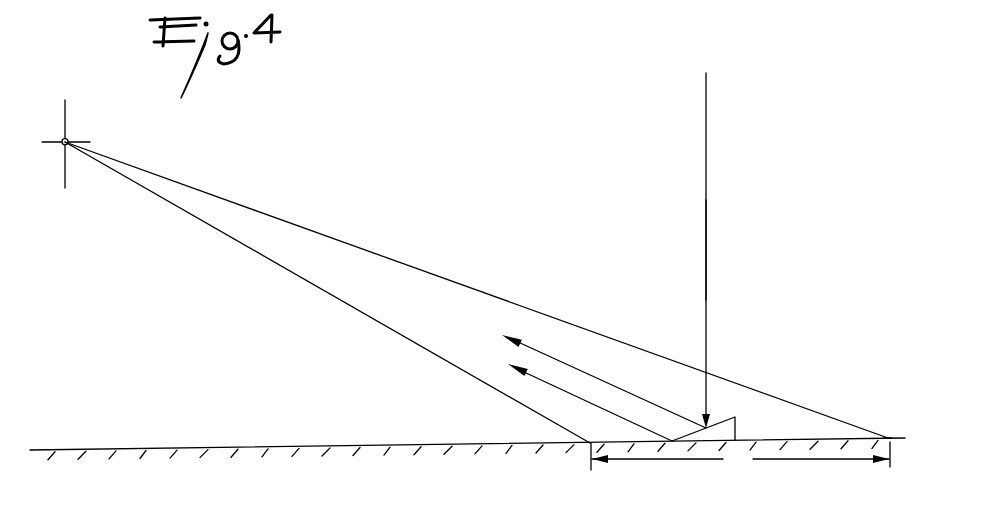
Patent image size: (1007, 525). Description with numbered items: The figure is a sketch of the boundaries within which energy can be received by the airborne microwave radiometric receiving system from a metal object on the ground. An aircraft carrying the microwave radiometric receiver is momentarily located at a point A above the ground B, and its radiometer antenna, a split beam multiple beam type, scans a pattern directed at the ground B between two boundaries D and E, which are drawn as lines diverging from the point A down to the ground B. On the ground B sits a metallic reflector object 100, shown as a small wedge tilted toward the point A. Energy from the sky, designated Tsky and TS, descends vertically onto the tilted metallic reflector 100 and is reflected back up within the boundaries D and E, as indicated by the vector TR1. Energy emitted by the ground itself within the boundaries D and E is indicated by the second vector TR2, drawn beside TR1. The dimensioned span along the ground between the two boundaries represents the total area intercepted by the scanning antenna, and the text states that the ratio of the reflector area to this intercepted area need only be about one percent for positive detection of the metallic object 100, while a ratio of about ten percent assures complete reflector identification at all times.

The metallic reflector object 100 is at (725, 417).
The aircraft point A is at (63, 146).
The ground B is at (825, 438).
The boundary D is at (442, 277).
The boundary E is at (403, 338).
The sky energy Tsky is at (708, 112).
The sky energy TS is at (706, 262).
The reflected energy vector TR1 is at (560, 360).
The ground emitted energy vector TR2 is at (545, 380).